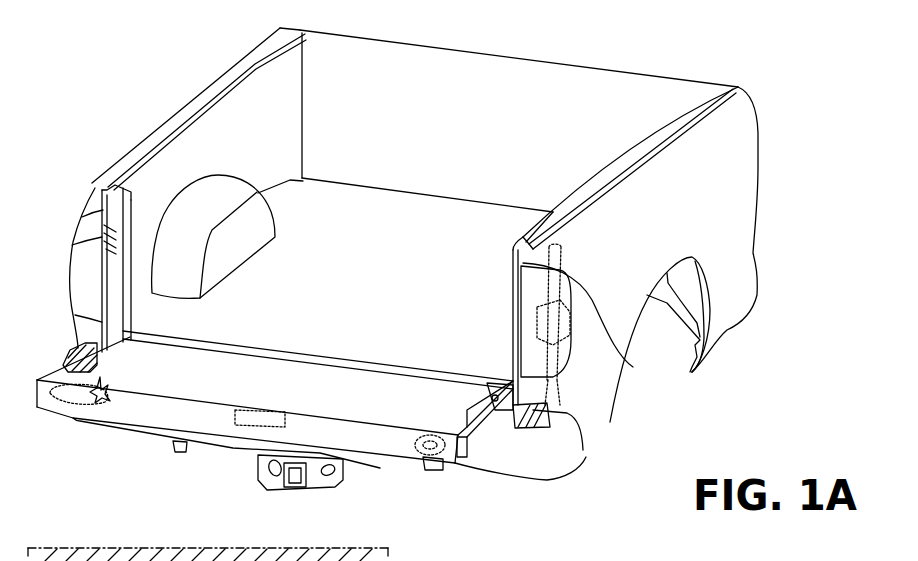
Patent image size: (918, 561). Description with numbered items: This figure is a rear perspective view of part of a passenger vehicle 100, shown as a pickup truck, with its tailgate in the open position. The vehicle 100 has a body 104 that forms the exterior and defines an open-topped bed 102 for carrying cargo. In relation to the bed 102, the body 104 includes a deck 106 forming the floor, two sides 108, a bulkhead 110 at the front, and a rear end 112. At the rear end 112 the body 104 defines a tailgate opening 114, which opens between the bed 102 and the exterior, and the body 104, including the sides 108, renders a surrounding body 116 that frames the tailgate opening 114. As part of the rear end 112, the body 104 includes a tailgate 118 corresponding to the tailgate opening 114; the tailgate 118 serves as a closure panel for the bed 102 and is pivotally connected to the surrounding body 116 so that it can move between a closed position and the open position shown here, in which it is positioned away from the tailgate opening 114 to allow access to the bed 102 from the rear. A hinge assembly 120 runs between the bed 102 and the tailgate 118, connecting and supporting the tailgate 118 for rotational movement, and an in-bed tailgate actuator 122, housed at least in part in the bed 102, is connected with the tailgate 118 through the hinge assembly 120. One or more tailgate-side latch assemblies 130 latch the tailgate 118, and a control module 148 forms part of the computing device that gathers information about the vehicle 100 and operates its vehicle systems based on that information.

The vehicle 100 is at (748, 96).
The bed 102 is at (723, 175).
The body 104 is at (760, 125).
The deck 106 is at (360, 203).
The sides 108 is at (290, 158).
The bulkhead 110 is at (498, 56).
The rear end 112 is at (590, 440).
The tailgate opening 114 is at (463, 358).
The surrounding body 116 is at (630, 368).
The tailgate 118 is at (430, 465).
The hinge assembly 120 is at (535, 398).
The in-bed tailgate actuator 122 is at (556, 357).
The tailgate-side latch assembly 130 is at (130, 402).
The control module 148 is at (284, 419).